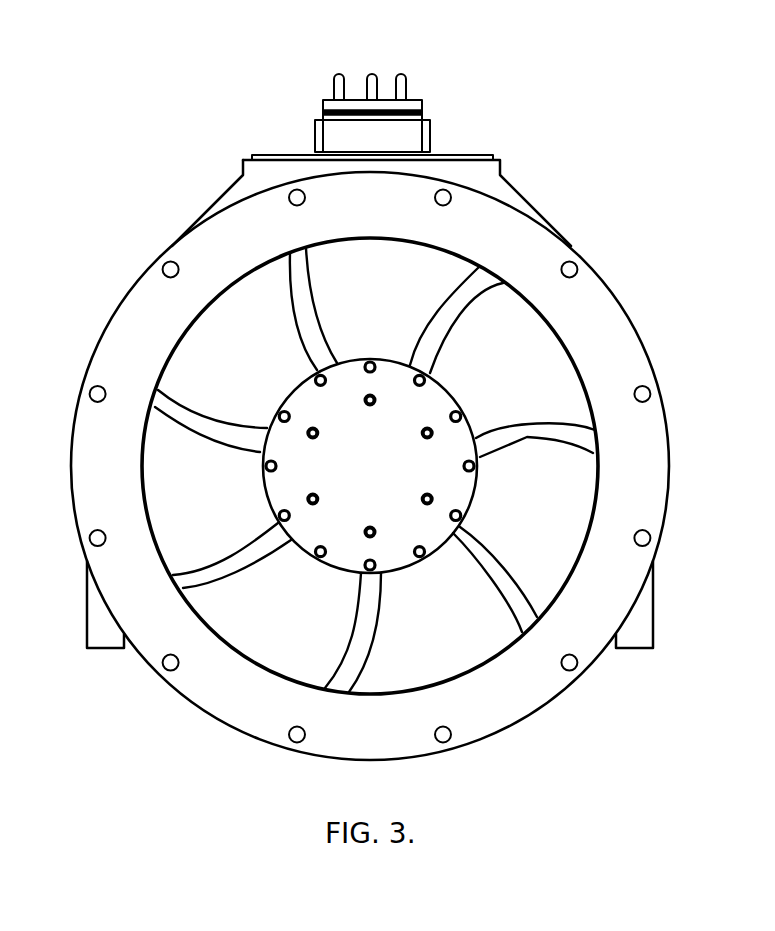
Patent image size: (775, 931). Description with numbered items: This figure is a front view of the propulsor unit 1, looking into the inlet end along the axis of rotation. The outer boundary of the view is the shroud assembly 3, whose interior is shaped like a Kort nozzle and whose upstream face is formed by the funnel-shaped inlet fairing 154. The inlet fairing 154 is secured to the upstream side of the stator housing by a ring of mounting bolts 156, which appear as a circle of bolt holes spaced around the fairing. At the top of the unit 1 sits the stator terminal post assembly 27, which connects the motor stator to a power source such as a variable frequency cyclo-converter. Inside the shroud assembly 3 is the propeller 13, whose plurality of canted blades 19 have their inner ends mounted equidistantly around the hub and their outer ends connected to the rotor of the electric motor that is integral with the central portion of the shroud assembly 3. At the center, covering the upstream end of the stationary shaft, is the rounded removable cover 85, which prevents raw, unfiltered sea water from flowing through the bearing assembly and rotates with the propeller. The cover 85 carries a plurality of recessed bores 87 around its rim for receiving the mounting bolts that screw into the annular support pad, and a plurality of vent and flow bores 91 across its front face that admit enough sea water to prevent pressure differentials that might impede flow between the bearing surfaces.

The propulsor unit 1 is at (379, 417).
The shroud assembly 3 is at (155, 257).
The propeller 13 is at (289, 335).
The canted blades 19 is at (527, 440).
The stator terminal post assembly 27 is at (410, 138).
The removable cover 85 is at (370, 460).
The recessed bores 87 is at (331, 375).
The vent and flow bores 91 is at (367, 406).
The inlet fairing 154 is at (617, 328).
The mounting bolts 156 is at (452, 200).